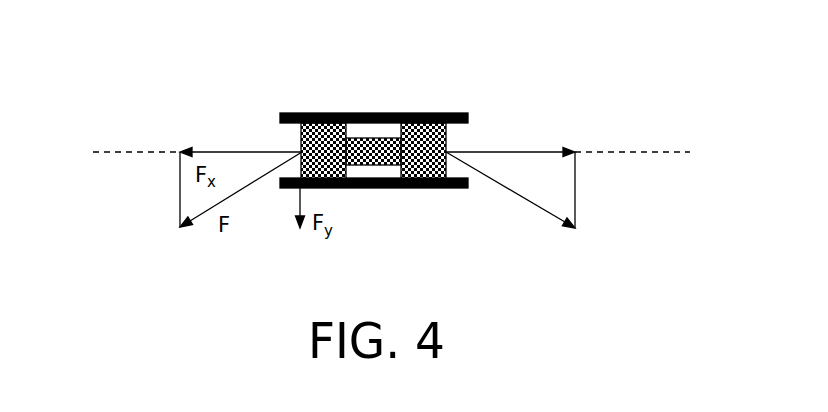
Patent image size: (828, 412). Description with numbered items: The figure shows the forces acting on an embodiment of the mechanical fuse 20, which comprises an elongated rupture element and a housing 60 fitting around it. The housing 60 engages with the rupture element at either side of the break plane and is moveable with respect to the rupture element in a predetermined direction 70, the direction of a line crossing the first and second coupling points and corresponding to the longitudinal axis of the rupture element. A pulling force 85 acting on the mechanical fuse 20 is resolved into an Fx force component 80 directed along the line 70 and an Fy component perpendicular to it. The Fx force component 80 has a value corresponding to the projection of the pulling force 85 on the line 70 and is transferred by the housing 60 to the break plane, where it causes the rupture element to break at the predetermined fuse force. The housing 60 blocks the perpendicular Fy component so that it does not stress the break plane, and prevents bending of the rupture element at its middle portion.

The mechanical fuse 20 is at (400, 94).
The housing 60 is at (378, 114).
The predetermined direction 70 is at (645, 150).
The Fx force component 80 is at (223, 150).
The pulling force 85 is at (510, 190).